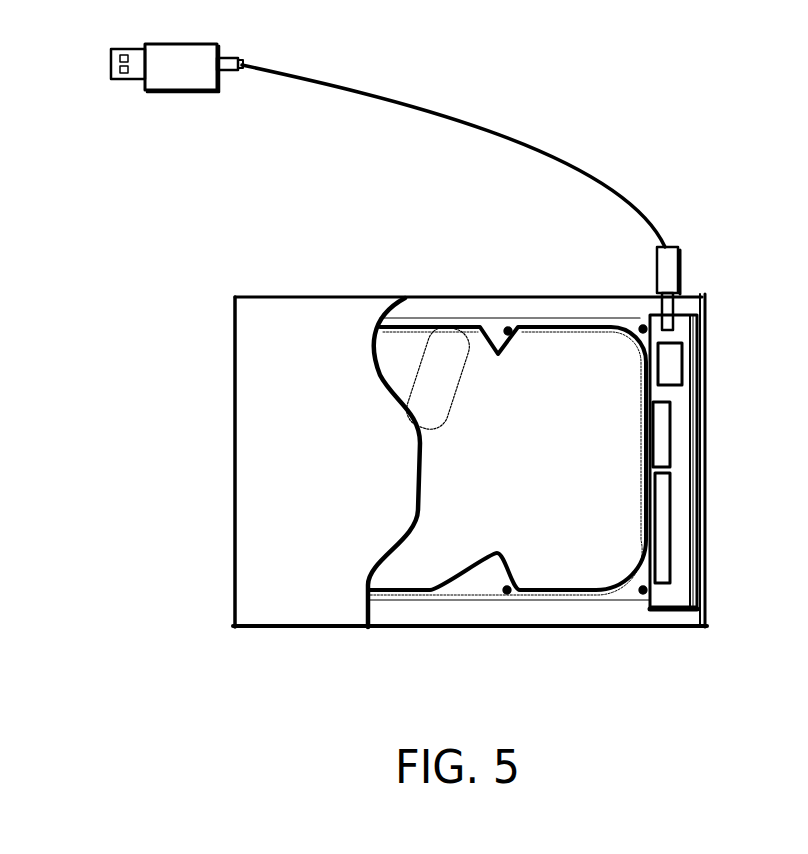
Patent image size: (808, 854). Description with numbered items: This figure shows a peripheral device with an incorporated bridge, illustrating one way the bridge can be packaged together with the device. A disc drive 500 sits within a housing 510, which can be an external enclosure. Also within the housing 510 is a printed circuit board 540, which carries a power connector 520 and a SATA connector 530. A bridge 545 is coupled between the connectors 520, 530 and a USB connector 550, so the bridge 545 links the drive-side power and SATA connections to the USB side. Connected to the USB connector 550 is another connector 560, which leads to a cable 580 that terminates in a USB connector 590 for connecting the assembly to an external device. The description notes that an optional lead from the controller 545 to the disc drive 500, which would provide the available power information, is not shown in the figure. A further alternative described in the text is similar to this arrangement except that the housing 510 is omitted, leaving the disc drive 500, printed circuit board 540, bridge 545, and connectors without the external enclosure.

The disc drive 500 is at (487, 600).
The housing 510 is at (235, 450).
The power connector 520 is at (690, 463).
The SATA connector 530 is at (690, 557).
The printed circuit board 540 is at (675, 612).
The bridge 545 is at (682, 370).
The USB connector 550 is at (705, 300).
The connector 560 is at (655, 272).
The cable 580 is at (450, 112).
The USB connector 590 is at (190, 92).